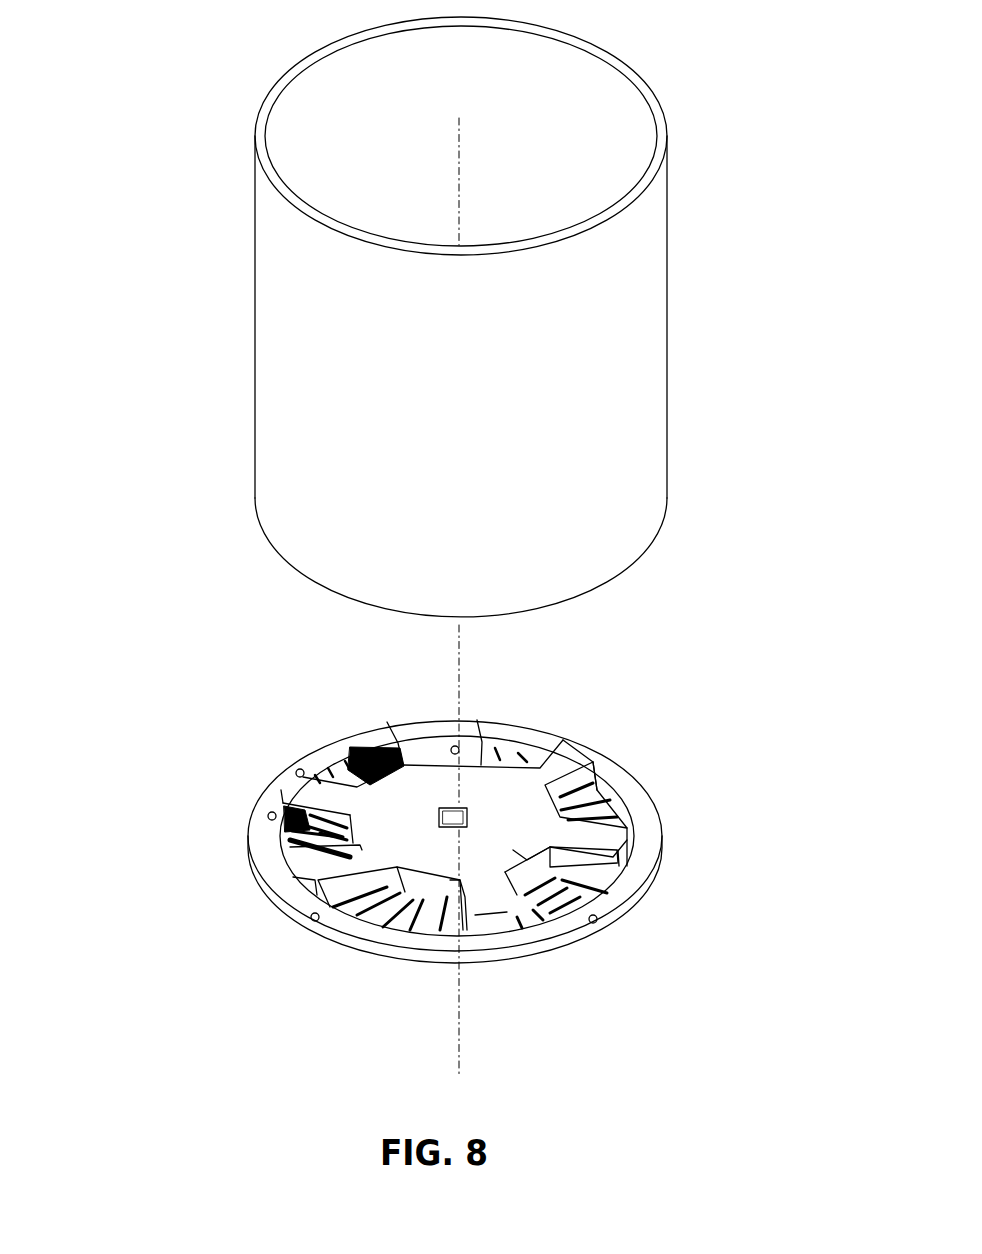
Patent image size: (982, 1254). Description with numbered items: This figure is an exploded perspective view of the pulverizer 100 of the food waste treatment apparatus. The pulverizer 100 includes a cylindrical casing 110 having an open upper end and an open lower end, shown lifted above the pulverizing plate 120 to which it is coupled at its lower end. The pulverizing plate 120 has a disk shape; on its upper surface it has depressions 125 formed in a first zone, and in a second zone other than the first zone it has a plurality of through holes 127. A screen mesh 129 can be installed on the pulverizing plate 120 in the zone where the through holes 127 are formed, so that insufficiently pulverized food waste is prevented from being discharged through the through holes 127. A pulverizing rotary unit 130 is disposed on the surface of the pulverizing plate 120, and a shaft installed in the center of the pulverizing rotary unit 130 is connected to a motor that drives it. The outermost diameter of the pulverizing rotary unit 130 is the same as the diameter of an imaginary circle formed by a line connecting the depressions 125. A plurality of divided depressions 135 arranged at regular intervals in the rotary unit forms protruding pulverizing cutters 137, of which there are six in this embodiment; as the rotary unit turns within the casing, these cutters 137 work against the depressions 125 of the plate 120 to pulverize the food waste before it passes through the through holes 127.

The pulverizer 100 is at (431, 546).
The cylindrical casing 110 is at (627, 341).
The pulverizing plate 120 is at (645, 818).
The depressions 125 is at (533, 940).
The through holes 127 is at (293, 772).
The screen mesh 129 is at (365, 748).
The pulverizing rotary unit 130 is at (512, 852).
The divided depressions 135 is at (418, 883).
The pulverizing cutters 137 is at (608, 847).